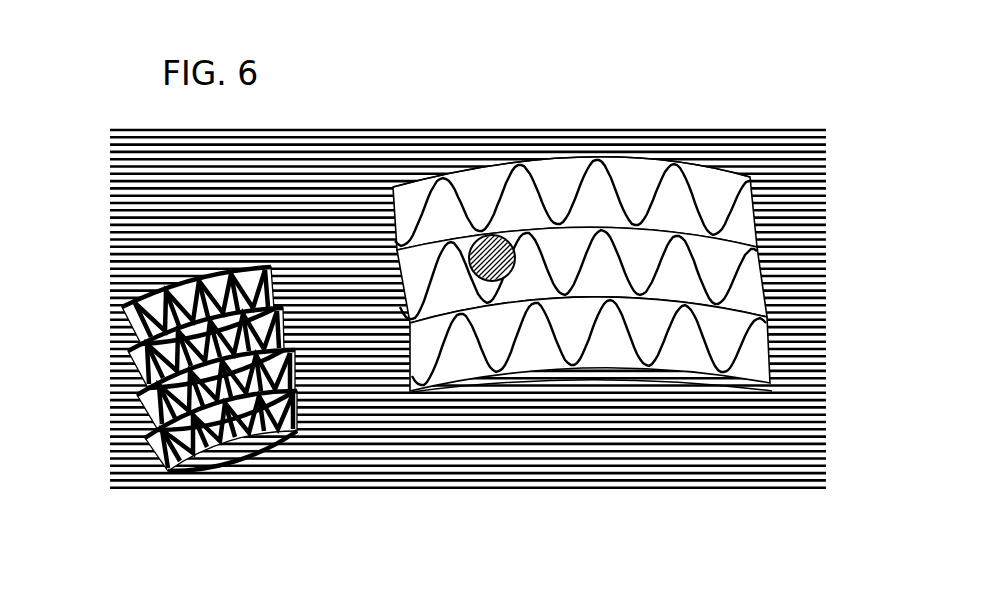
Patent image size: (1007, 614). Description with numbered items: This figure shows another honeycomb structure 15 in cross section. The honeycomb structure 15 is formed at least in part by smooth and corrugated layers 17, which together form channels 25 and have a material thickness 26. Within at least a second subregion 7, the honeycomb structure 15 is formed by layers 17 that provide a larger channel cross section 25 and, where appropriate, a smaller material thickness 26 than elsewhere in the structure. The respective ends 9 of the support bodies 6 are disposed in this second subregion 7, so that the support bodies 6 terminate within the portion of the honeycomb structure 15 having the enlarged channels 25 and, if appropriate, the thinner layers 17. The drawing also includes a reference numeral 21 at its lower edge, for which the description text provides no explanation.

The support body 6 is at (490, 232).
The second subregion 7 is at (577, 167).
The end of support body 9 is at (493, 232).
The honeycomb structure 15 is at (527, 472).
The layer 17 is at (415, 178).
The stent portion 21 is at (735, 613).
The channel 25 is at (642, 168).
The material thickness 26 is at (717, 170).